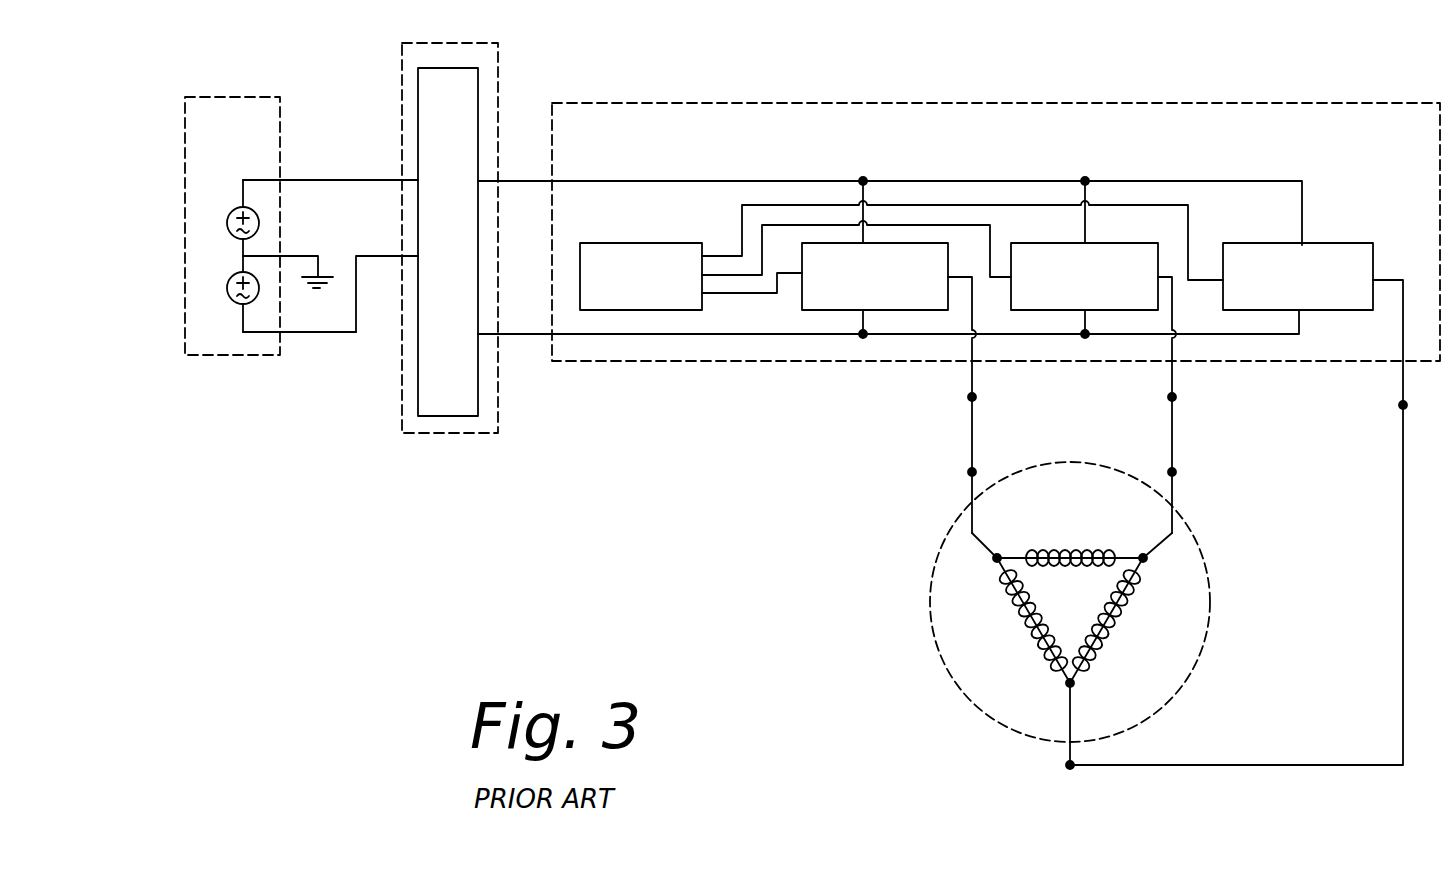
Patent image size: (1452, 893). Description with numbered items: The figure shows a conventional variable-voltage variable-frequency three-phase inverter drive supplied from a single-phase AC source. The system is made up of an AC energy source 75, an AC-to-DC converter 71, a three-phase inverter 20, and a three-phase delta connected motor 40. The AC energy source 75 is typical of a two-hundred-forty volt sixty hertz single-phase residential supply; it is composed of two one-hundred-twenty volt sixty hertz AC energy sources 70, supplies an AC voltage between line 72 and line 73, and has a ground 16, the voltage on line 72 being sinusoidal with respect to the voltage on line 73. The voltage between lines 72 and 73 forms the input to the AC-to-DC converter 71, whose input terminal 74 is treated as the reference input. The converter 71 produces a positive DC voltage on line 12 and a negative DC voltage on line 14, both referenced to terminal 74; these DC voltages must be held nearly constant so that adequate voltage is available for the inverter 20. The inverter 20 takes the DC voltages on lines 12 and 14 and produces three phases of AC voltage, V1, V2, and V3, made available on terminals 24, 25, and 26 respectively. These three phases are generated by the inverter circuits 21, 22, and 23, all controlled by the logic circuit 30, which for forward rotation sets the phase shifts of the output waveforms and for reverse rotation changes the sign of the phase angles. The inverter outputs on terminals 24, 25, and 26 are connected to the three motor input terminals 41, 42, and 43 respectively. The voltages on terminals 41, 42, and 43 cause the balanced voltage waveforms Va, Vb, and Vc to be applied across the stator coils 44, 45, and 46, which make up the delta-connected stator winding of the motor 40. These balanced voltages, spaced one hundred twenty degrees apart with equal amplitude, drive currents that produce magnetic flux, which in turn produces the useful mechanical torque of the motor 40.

The line 12 is at (514, 179).
The line 14 is at (520, 335).
The ground 16 is at (300, 259).
The three-phase inverter 20 is at (1313, 128).
The inverter circuit 21 is at (846, 302).
The inverter circuit 22 is at (1136, 304).
The inverter circuit 23 is at (1286, 304).
The terminal 24 is at (973, 371).
The terminal 25 is at (1173, 367).
The terminal 26 is at (1406, 375).
The logic circuit 30 is at (618, 247).
The three-phase delta connected motor 40 is at (946, 676).
The motor input terminal 41 is at (971, 486).
The motor input terminal 42 is at (1171, 490).
The motor input terminal 43 is at (1064, 742).
The stator coil 44 is at (1137, 557).
The stator coil 45 is at (1075, 680).
The stator coil 46 is at (1005, 568).
The AC energy source 70 is at (210, 266).
The AC-to-DC converter 71 is at (450, 416).
The line 72 is at (335, 179).
The line 73 is at (297, 333).
The input terminal 74 is at (367, 256).
The AC energy source 75 is at (212, 355).